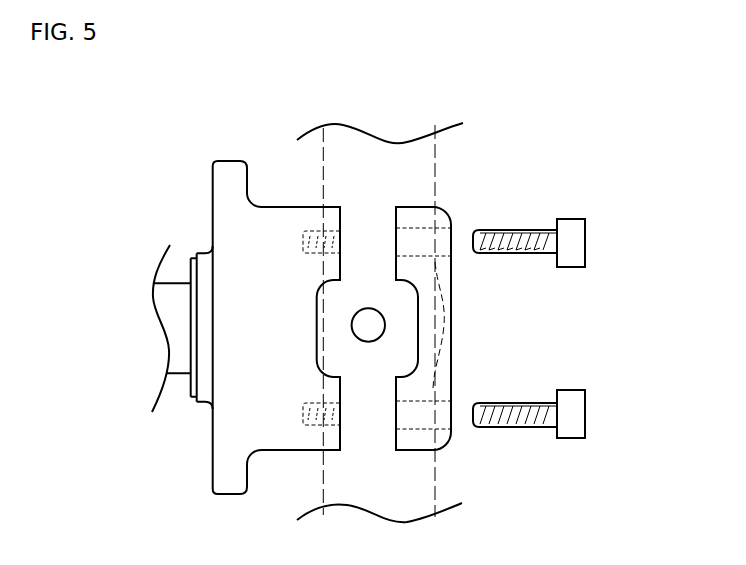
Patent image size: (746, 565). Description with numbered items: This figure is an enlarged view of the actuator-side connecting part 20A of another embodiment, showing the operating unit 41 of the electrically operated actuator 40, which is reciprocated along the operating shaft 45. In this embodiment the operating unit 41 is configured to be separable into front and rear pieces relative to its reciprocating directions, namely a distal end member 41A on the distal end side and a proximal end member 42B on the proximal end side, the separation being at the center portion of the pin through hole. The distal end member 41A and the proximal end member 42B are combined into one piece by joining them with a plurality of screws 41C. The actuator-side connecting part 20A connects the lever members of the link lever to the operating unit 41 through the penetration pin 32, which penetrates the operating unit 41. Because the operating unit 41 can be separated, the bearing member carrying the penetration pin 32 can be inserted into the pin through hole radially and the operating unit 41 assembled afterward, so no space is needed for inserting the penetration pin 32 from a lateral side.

The operating shaft 45 is at (178, 374).
The proximal end member 42B is at (273, 453).
The penetration pin 32 is at (366, 312).
The distal end member 41A is at (415, 452).
The operating unit 41 is at (506, 312).
The electrically operated actuator 40 is at (506, 312).
The screws 41C is at (575, 219).
The actuator-side connecting part 20A is at (544, 312).